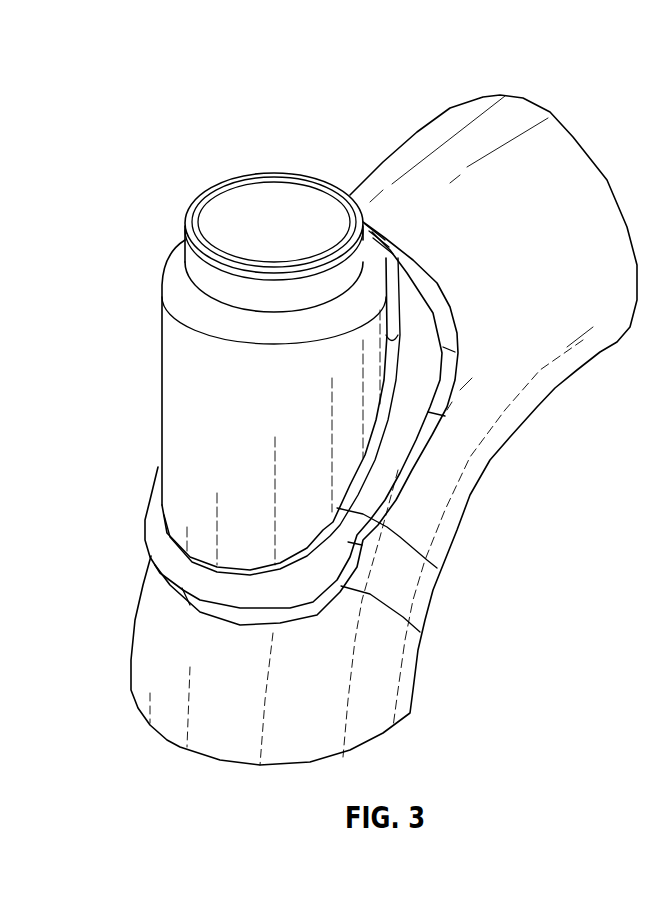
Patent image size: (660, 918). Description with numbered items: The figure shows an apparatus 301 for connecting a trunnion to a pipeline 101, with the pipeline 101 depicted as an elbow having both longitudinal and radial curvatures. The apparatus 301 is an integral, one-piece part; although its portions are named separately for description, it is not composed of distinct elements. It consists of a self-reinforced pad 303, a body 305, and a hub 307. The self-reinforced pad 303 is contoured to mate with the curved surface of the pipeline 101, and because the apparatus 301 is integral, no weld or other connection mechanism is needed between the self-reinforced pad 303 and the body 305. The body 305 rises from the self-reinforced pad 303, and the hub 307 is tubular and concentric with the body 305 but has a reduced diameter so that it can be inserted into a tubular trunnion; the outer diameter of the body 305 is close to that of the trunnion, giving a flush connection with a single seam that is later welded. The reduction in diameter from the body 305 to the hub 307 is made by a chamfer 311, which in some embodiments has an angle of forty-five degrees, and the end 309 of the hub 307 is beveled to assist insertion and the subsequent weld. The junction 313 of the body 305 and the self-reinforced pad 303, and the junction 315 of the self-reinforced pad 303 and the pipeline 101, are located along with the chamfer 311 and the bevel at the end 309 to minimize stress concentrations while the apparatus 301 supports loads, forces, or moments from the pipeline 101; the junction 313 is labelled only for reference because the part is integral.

The pipeline 101 is at (514, 117).
The apparatus 301 is at (192, 393).
The self-reinforced pad 303 is at (447, 352).
The body 305 is at (350, 423).
The hub 307 is at (360, 257).
The end 309 is at (300, 173).
The chamfer 311 is at (173, 257).
The junction 313 is at (437, 568).
The junction 315 is at (420, 632).